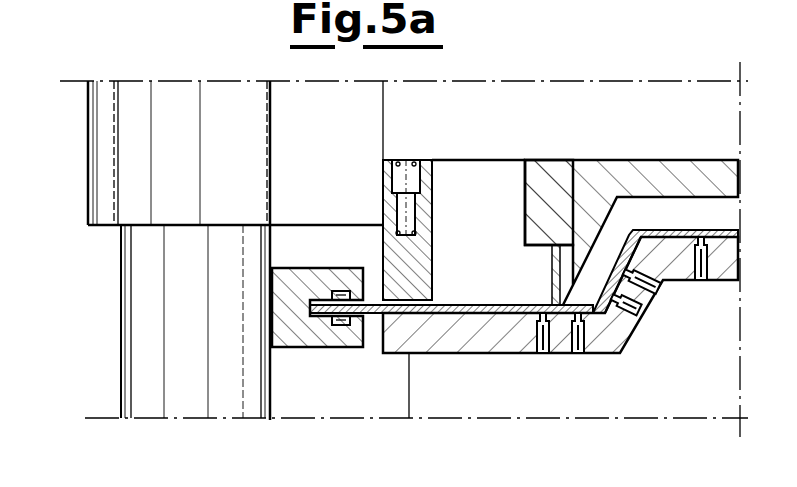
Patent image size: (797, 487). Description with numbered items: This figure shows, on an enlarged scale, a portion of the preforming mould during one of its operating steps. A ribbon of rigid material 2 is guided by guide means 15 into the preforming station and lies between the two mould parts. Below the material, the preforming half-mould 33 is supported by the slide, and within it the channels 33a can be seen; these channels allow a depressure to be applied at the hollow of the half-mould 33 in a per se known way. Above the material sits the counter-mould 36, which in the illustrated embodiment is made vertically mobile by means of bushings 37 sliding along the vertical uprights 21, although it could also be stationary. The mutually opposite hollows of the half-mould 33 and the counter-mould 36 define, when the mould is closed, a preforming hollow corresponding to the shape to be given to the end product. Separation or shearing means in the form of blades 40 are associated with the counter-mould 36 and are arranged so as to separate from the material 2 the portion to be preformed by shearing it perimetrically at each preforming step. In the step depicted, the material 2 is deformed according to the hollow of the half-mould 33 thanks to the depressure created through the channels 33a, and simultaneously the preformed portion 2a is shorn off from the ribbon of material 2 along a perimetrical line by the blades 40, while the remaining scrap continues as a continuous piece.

The bushings 37 is at (103, 168).
The vertical uprights 21 is at (138, 382).
The guide means 15 is at (295, 328).
The material 2 is at (375, 316).
The preformed portion 2a is at (725, 235).
The preforming half-mould 33 is at (463, 342).
The channels 33a is at (578, 350).
The counter-mould 36 is at (686, 175).
The blades 40 is at (549, 275).